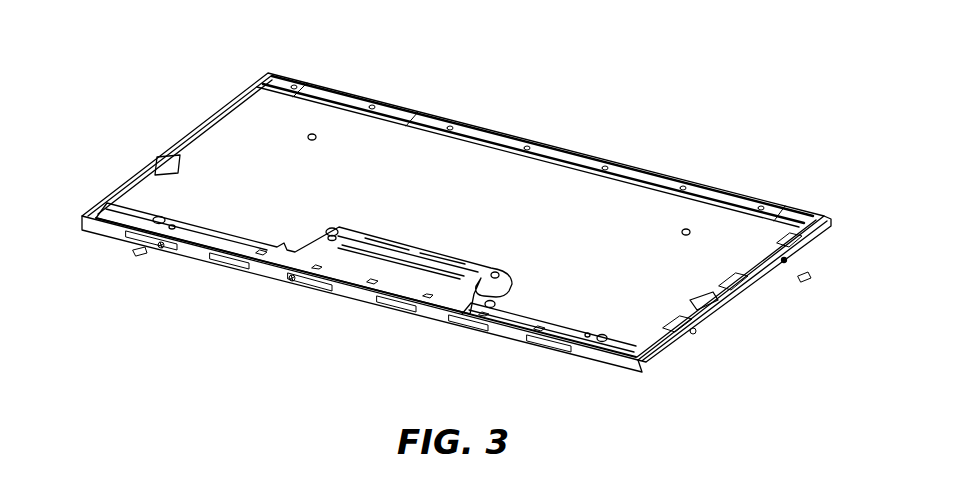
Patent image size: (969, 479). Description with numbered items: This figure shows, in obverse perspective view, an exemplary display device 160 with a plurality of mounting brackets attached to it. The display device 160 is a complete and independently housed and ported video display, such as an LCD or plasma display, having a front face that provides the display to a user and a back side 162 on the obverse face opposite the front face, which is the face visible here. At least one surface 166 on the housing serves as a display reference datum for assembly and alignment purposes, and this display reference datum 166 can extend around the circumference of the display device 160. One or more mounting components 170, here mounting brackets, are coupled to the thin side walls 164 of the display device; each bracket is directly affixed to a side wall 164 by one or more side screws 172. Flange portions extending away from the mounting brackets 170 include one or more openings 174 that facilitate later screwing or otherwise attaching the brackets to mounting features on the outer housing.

The display device 160 is at (735, 66).
The back side 162 is at (483, 201).
The side wall 164 is at (370, 297).
The display reference datum surface 166 is at (616, 370).
The mounting component 170 is at (203, 261).
The side screw 172 is at (291, 281).
The opening 174 is at (139, 253).